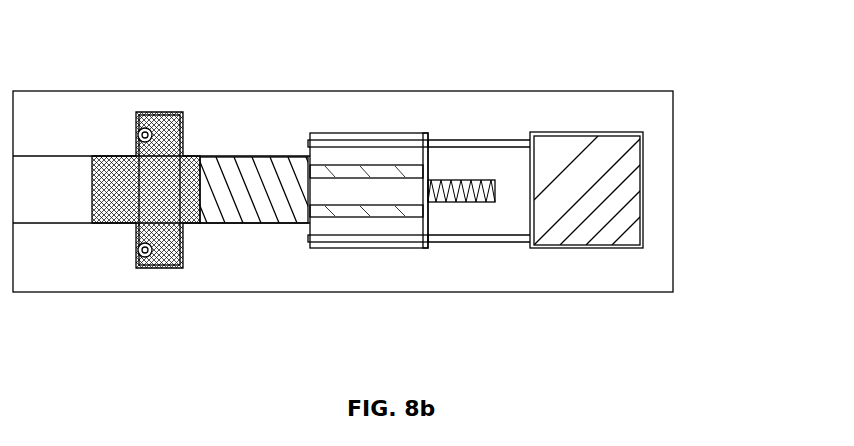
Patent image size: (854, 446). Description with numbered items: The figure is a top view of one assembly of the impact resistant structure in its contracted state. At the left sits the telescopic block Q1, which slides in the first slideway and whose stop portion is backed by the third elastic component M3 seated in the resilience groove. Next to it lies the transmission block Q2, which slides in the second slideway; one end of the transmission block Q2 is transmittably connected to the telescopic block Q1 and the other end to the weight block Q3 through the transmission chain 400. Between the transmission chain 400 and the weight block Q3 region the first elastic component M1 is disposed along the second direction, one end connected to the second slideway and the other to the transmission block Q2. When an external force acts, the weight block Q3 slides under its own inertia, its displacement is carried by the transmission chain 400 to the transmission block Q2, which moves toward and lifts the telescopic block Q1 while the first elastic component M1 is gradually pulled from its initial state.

The telescopic block Q1 is at (168, 180).
The transmission block Q2 is at (250, 200).
The weight block Q3 is at (608, 190).
The third elastic component M3 is at (152, 133).
The first elastic component M1 is at (458, 200).
The transmission chain 400 is at (330, 240).